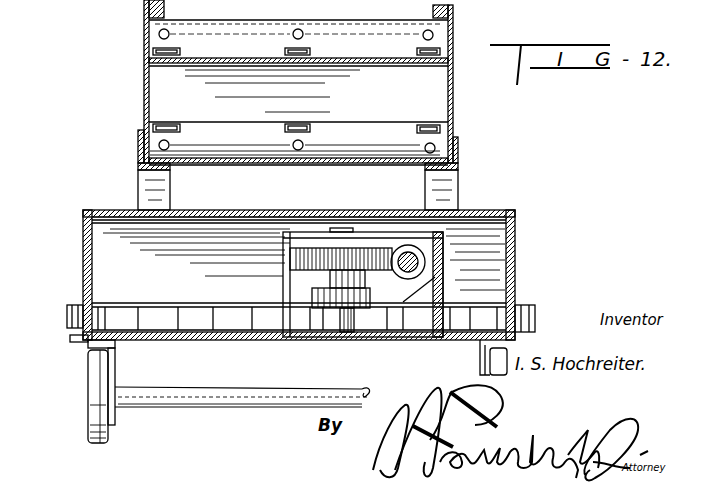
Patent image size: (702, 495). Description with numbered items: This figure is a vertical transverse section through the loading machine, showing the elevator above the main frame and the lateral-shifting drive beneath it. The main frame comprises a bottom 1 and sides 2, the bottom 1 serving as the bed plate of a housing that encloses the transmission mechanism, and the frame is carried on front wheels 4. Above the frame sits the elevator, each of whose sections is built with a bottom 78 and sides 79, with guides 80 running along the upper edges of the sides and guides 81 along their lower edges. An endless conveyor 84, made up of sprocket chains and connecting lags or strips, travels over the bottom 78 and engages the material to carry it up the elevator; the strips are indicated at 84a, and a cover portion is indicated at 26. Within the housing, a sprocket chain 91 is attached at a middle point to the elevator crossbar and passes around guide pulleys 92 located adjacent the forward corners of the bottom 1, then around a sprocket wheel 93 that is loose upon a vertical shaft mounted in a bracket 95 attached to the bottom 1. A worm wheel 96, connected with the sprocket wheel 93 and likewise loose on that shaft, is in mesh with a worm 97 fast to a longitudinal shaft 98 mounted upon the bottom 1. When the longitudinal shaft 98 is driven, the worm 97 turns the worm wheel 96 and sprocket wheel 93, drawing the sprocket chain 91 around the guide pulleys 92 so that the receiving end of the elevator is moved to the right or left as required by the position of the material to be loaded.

The bottom 1 is at (193, 340).
The sides 2 is at (83, 250).
The front wheels 4 is at (86, 383).
The cover plate 26 is at (262, 209).
The bottom 78 is at (185, 63).
The sides 79 is at (144, 100).
The guides 80 is at (149, 9).
The guides 81 is at (138, 172).
The endless conveyor 84 is at (310, 52).
The tray plate 84a is at (298, 98).
The sprocket chain 91 is at (166, 303).
The guide pulleys 92 is at (70, 333).
The sprocket wheel 93 is at (350, 323).
The bracket 95 is at (286, 300).
The worm wheel 96 is at (283, 258).
The worm 97 is at (342, 230).
The longitudinal shaft 98 is at (443, 252).